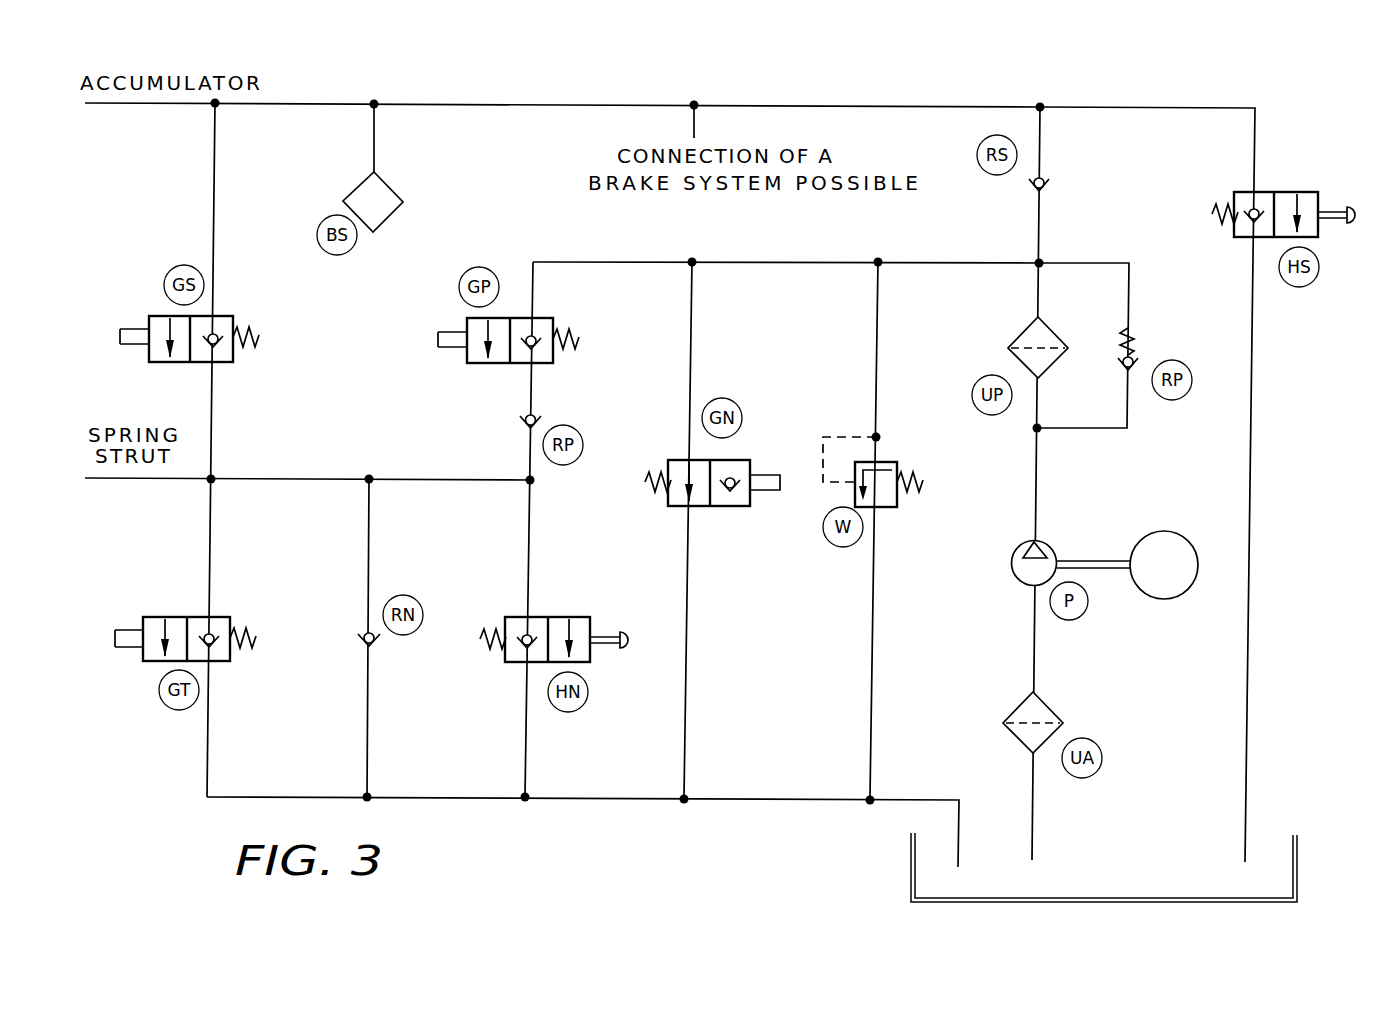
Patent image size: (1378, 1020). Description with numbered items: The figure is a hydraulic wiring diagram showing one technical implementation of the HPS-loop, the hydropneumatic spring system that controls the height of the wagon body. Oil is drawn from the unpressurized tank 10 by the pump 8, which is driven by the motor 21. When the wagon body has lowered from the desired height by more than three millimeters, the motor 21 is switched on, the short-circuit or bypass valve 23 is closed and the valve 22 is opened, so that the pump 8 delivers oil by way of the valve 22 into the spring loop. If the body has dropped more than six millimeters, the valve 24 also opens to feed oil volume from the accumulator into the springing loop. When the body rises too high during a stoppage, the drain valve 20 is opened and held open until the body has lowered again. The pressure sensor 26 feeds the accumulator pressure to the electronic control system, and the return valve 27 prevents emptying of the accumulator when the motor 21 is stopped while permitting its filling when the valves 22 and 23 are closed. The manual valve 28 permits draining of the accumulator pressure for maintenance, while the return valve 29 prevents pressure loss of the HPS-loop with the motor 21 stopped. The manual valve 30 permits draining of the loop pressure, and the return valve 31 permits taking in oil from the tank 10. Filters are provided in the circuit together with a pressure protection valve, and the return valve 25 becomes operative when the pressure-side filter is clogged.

The pump 8 is at (1023, 578).
The unpressurized tank 10 is at (1260, 835).
The drain valve (GT) 20 is at (228, 617).
The motor (M) 21 is at (1165, 545).
The valve (GP) 22 is at (500, 350).
The short-circuit or bypass valve (GN) 23 is at (698, 497).
The valve (GS) 24 is at (220, 323).
The return valve 25 is at (1135, 360).
The pressure sensor (BS) 26 is at (382, 197).
The return valve (RS) 27 is at (1048, 180).
The manual valve (HS) 28 is at (1307, 197).
The return valve (RP) 29 is at (540, 417).
The manual valve HN 30 is at (558, 622).
The return valve RN 31 is at (378, 645).